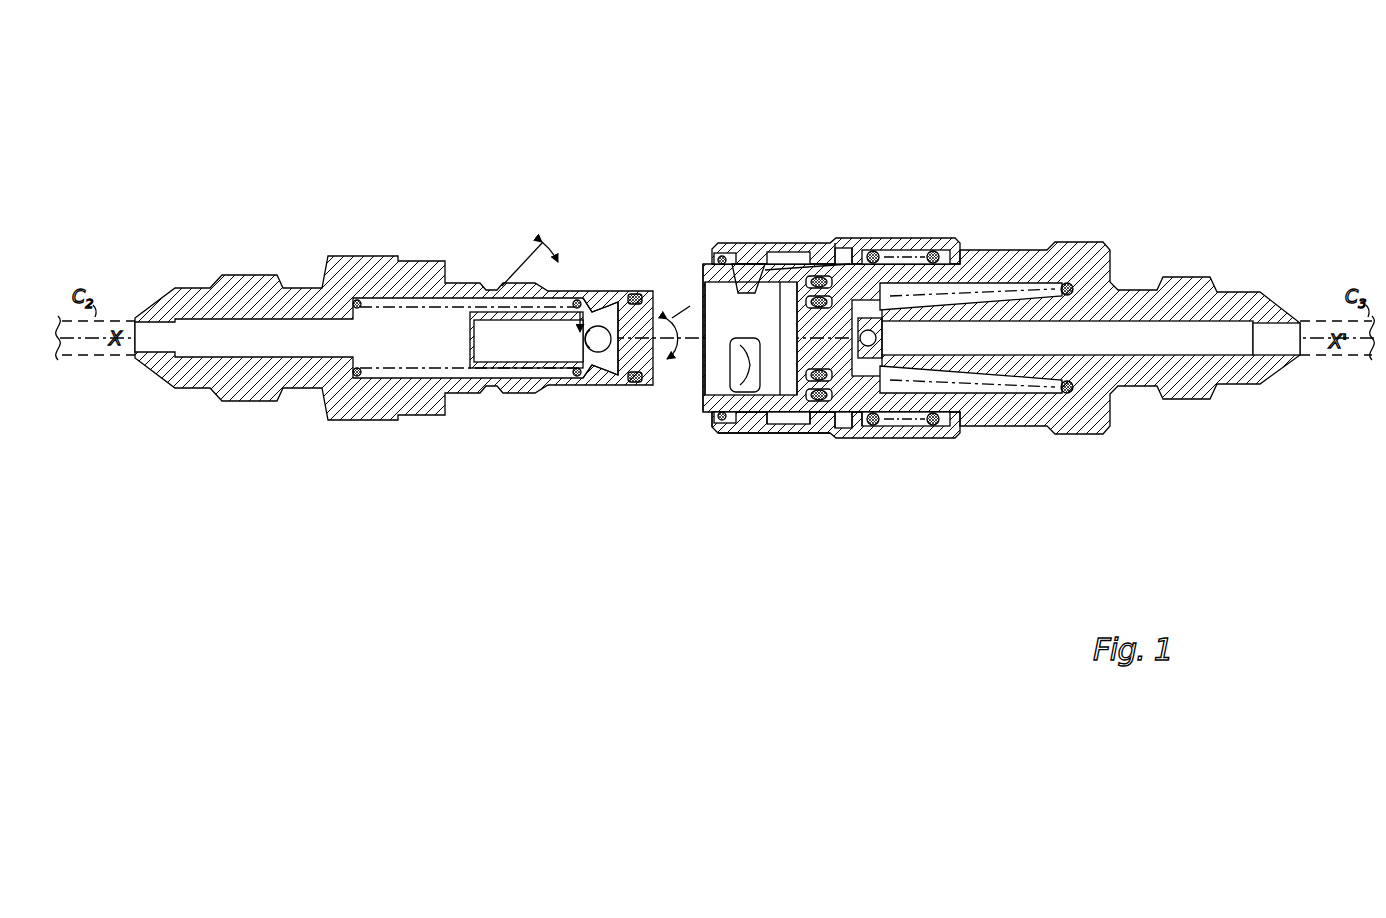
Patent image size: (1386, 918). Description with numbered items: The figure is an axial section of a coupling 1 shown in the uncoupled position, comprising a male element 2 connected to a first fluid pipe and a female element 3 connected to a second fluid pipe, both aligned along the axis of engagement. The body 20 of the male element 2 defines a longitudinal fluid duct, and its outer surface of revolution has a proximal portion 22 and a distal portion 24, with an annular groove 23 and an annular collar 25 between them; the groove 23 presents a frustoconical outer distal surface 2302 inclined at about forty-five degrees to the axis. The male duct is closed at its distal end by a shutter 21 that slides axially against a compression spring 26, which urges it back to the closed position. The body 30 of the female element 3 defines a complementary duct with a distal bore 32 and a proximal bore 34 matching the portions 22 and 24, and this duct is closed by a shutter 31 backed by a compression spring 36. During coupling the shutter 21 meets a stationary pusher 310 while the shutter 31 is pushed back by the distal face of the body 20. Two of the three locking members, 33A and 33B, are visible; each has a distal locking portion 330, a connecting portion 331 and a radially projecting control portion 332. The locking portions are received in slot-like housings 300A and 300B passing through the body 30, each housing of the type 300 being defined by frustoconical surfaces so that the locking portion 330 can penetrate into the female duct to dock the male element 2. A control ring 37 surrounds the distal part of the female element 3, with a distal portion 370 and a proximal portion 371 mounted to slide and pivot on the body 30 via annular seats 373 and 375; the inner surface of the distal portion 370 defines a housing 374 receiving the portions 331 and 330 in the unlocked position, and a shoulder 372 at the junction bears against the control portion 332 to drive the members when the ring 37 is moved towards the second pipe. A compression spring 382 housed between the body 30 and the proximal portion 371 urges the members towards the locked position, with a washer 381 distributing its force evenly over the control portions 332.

The coupling 1 is at (688, 53).
The male element 2 is at (563, 148).
The female element 3 is at (758, 147).
The body of the male element 20 is at (192, 375).
The shutter 21 is at (620, 383).
The proximal portion 22 is at (462, 400).
The annular groove 23 is at (493, 393).
The distal portion 24 is at (633, 400).
The annular collar 25 is at (512, 400).
The compression spring 26 is at (370, 388).
The body of the female element 30 is at (1210, 398).
The shutter 31 is at (967, 274).
The distal bore 32 is at (705, 433).
The locking member 33A is at (833, 181).
The locking member 33B is at (735, 437).
The proximal bore 34 is at (802, 422).
The compression spring 36 is at (935, 385).
The control ring 37 is at (952, 553).
The housing 300 is at (681, 320).
The housing 300A is at (738, 293).
The housing 300B is at (723, 367).
The stationary pusher 310 is at (887, 433).
The locking portion 330 is at (735, 245).
The connecting portion 331 is at (787, 245).
The control portion 332 is at (845, 245).
The distal portion of the control ring 370 is at (758, 437).
The proximal portion of the control ring 371 is at (913, 440).
The shoulder 372 is at (863, 437).
The annular seat 373 is at (728, 433).
The housing 374 is at (807, 435).
The annular seat 375 is at (952, 440).
The washer 381 is at (860, 245).
The compression spring 382 is at (937, 245).
The outer distal surface 2302 is at (496, 281).